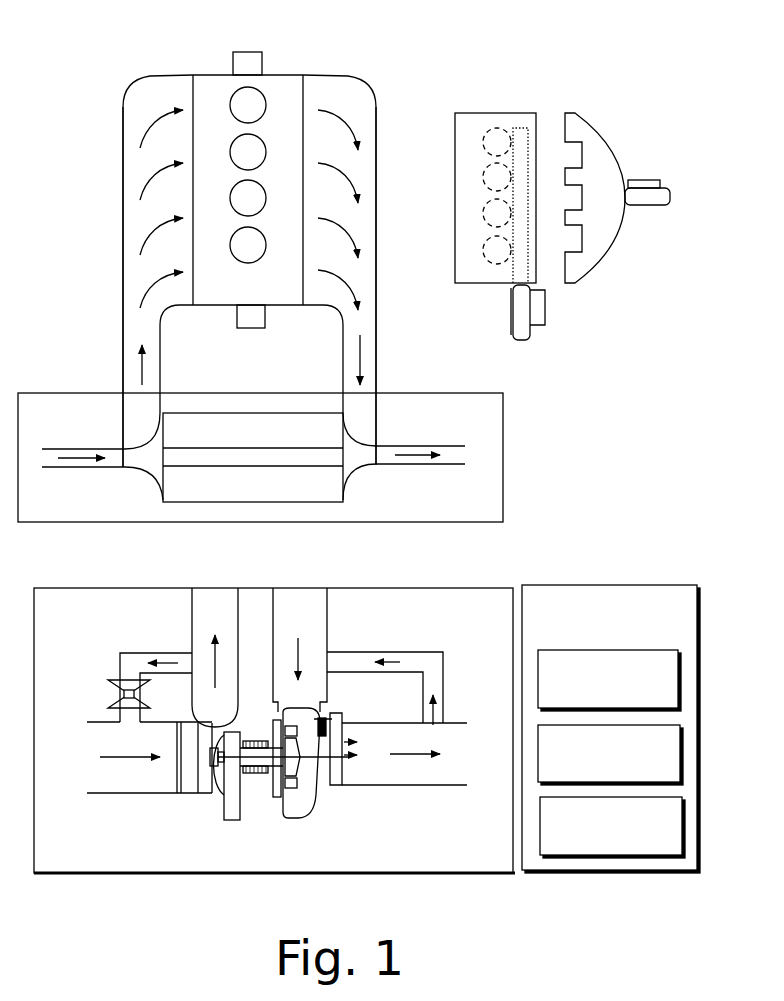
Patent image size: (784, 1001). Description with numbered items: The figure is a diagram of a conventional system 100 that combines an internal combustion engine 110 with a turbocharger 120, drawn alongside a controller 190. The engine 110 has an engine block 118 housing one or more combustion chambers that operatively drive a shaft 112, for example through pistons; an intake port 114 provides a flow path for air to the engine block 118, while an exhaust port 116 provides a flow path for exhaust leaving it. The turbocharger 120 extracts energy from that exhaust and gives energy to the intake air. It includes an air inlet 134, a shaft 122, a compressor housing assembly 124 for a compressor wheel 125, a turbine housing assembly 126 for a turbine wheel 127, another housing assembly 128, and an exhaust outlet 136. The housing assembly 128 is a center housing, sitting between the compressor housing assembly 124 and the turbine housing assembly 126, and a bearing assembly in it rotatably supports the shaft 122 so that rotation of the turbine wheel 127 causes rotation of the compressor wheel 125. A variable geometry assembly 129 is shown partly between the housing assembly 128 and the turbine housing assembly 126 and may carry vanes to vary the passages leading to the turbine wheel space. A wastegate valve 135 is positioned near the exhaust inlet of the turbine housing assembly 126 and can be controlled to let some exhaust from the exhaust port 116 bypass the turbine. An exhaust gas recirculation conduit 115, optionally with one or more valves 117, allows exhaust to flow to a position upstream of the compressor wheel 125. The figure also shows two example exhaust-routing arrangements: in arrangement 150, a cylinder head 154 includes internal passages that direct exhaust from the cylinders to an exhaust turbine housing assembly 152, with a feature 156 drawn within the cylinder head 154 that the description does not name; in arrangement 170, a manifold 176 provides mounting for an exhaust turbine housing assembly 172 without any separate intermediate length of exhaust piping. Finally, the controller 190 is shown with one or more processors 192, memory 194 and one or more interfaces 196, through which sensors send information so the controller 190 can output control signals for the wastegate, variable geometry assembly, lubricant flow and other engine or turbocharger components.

The system 100 is at (365, 35).
The internal combustion engine 110 is at (218, 75).
The shaft 112 is at (247, 52).
The intake port 114 is at (133, 90).
The exhaust gas recirculation conduit 115 is at (122, 653).
The exhaust port 116 is at (360, 92).
The valve 117 is at (112, 684).
The engine block 118 is at (251, 348).
The turbocharger 120 is at (418, 392).
The shaft 122 is at (255, 466).
The compressor housing assembly 124 is at (148, 478).
The compressor wheel 125 is at (232, 745).
The turbine housing assembly 126 is at (360, 478).
The turbine wheel 127 is at (300, 770).
The housing assembly 128 is at (287, 860).
The variable geometry assembly 129 is at (282, 800).
The air inlet 134 is at (98, 448).
The wastegate valve 135 is at (325, 718).
The exhaust outlet 136 is at (425, 446).
The arrangement 150 is at (495, 100).
The exhaust turbine housing assembly 152 is at (511, 305).
The cylinder head 154 is at (455, 180).
The passage 156 is at (516, 128).
The arrangement 170 is at (605, 108).
The exhaust turbine housing assembly 172 is at (645, 206).
The manifold 176 is at (610, 245).
The controller 190 is at (611, 729).
The processors 192 is at (609, 680).
The memory 194 is at (610, 755).
The interfaces 196 is at (612, 827).